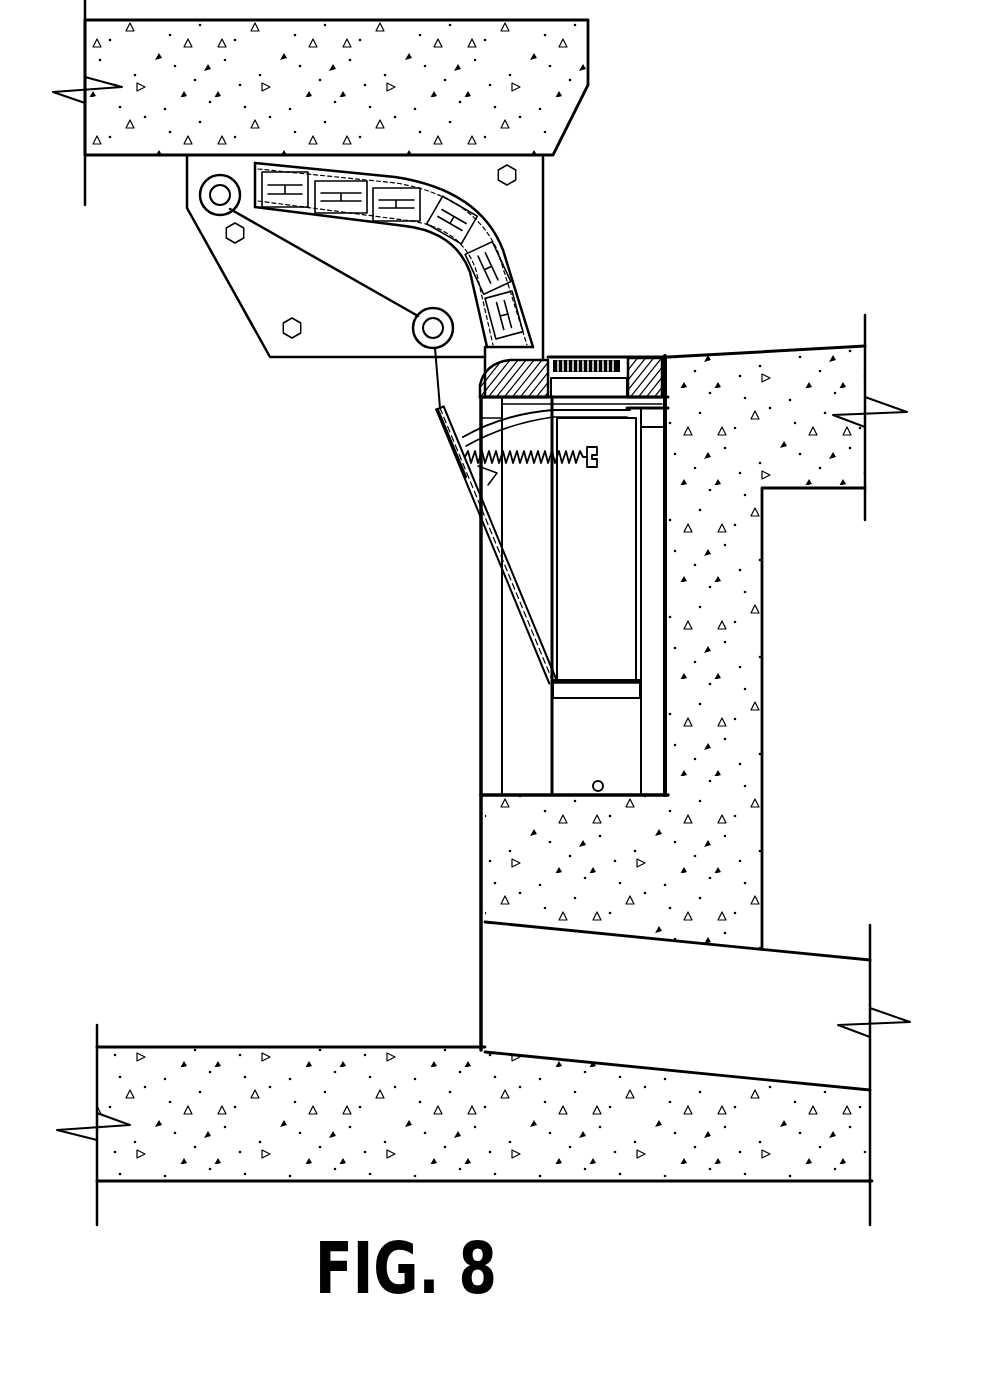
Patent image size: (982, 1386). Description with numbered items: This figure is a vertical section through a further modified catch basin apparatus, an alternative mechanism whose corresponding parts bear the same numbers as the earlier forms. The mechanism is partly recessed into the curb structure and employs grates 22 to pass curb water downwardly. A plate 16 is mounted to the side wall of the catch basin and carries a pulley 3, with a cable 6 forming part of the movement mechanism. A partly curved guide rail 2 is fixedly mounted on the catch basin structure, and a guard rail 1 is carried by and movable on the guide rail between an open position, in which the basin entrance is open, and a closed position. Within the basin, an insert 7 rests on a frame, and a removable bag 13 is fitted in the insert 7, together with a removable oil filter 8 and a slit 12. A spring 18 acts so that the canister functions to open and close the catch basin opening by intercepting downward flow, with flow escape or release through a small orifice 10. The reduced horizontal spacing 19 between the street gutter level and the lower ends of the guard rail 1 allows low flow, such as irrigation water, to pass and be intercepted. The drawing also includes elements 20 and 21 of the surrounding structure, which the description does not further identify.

The guard rail 1 is at (288, 208).
The guide rail 2 is at (522, 283).
The pulley 3 is at (207, 212).
The cable 6 is at (352, 278).
The insert 7 is at (537, 575).
The oil filter 8 is at (496, 556).
The orifice 10 is at (594, 790).
The slit 12 is at (480, 508).
The bag 13 is at (531, 648).
The plate 16 is at (525, 234).
The spring 18 is at (487, 461).
The reduced horizontal spacing 19 is at (530, 352).
The housing 20 is at (492, 743).
The concrete curb 21 is at (645, 353).
The grate 22 is at (607, 357).